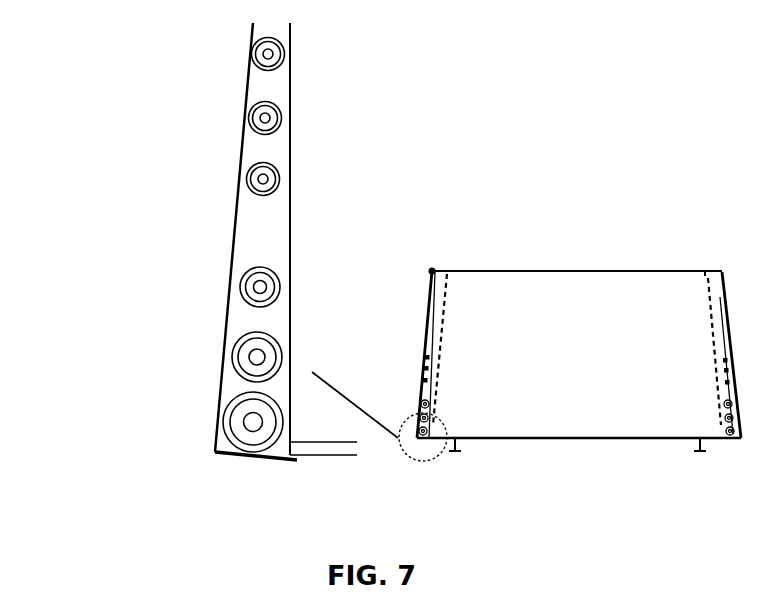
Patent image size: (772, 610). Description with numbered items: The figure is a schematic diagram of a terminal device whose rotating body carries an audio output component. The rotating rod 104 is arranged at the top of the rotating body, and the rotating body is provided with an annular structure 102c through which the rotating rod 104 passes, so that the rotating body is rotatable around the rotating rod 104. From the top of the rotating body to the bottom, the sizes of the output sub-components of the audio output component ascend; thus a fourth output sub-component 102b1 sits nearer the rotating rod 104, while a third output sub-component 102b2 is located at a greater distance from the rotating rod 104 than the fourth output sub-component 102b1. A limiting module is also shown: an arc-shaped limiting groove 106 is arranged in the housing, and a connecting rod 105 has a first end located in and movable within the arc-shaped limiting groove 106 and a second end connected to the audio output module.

The fourth output sub-component 102b1 is at (243, 177).
The third output sub-component 102b2 is at (220, 417).
The annular structure 102c is at (432, 271).
The rotating rod 104 is at (432, 271).
The connecting rod 105 is at (288, 453).
The arc-shaped limiting groove 106 is at (325, 447).